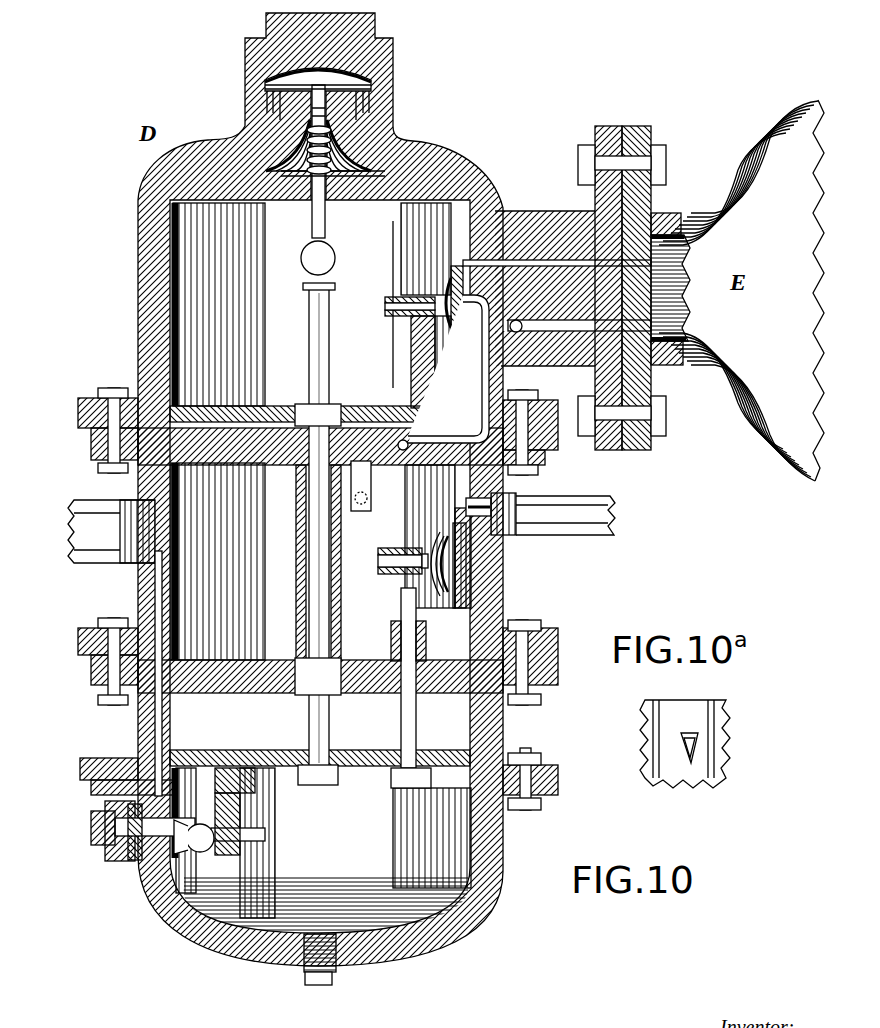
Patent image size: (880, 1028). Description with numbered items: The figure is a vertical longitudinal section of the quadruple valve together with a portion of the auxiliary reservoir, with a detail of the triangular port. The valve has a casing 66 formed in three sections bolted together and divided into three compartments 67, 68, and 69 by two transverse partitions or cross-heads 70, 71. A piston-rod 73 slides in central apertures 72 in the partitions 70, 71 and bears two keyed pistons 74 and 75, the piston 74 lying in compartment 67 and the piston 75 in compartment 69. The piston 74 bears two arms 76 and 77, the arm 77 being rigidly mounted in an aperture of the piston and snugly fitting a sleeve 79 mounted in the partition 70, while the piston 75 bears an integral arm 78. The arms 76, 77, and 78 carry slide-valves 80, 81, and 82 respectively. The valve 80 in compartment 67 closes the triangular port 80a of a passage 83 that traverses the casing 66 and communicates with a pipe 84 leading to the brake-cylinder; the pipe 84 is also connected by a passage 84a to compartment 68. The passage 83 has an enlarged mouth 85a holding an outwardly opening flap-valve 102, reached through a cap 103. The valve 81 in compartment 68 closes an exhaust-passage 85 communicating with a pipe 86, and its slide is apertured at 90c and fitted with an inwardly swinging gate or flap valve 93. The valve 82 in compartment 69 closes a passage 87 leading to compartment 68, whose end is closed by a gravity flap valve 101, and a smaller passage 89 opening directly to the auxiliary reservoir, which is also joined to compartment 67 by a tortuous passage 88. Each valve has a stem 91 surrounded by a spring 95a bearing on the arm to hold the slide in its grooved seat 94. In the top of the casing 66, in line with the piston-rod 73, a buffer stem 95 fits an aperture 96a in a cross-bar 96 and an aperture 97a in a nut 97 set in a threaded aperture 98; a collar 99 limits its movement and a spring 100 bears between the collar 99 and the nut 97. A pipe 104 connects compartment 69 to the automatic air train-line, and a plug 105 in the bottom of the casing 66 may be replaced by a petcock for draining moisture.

In FIG. 10, the casing 66 is at (132, 262).
In FIG. 10a, the casing 66 is at (708, 742).
In FIG. 10, the compartment 67 is at (323, 850).
In FIG. 10, the compartment 68 is at (357, 599).
In FIG. 10, the compartment 69 is at (352, 361).
In FIG. 10, the partition 70 is at (348, 660).
In FIG. 10, the partition 71 is at (258, 450).
In FIG. 10, the central aperture 72 is at (288, 420).
In FIG. 10, the piston-rod 73 is at (301, 320).
In FIG. 10, the piston 74 is at (334, 746).
In FIG. 10, the piston 75 is at (358, 408).
In FIG. 10, the arm 76 is at (225, 790).
In FIG. 10, the arm 77 is at (393, 713).
In FIG. 10, the arm 78 is at (410, 333).
In FIG. 10, the sleeve 79 is at (386, 622).
In FIG. 10, the slide-valve 80 is at (206, 838).
In FIG. 10, the port 80a is at (158, 842).
In FIG. 10a, the port 80a is at (680, 752).
In FIG. 10, the slide-valve 81 is at (430, 535).
In FIG. 10, the slide-valve 82 is at (440, 280).
In FIG. 10, the passage 83 is at (147, 716).
In FIG. 10, the pipe 84 is at (111, 531).
In FIG. 10, the passage 84a is at (116, 560).
In FIG. 10, the exhaust-passage 85 is at (495, 485).
In FIG. 10, the enlarged mouth 85a is at (120, 806).
In FIG. 10, the pipe 86 is at (565, 515).
In FIG. 10, the passage 87 is at (483, 372).
In FIG. 10, the tortuous passage 88 is at (570, 330).
In FIG. 10, the passage 89 is at (510, 250).
In FIG. 10, the aperture 90c is at (455, 556).
In FIG. 10, the stem 91 is at (378, 298).
In FIG. 10, the gate or flap valve 93 is at (455, 540).
In FIG. 10, the grooved seat 94 is at (450, 247).
In FIG. 10a, the grooved seat 94 is at (685, 736).
In FIG. 10, the stem 95 is at (318, 210).
In FIG. 10, the spring 95a is at (440, 290).
In FIG. 10, the cross-bar 96 is at (372, 180).
In FIG. 10, the aperture 96a is at (303, 205).
In FIG. 10, the nut 97 is at (372, 107).
In FIG. 10, the aperture 97a is at (365, 84).
In FIG. 10, the threaded aperture 98 is at (262, 96).
In FIG. 10, the collar 99 is at (298, 170).
In FIG. 10, the spring 100 is at (292, 124).
In FIG. 10, the flap or gate valve 101 is at (358, 470).
In FIG. 10, the flap-valve 102 is at (108, 840).
In FIG. 10, the cap 103 is at (84, 819).
In FIG. 10, the pipe 104 is at (318, 258).
In FIG. 10, the plug 105 is at (324, 971).